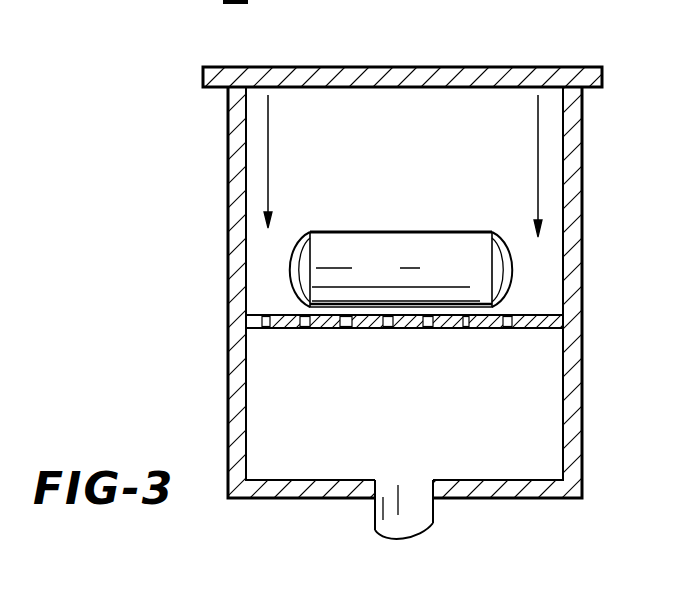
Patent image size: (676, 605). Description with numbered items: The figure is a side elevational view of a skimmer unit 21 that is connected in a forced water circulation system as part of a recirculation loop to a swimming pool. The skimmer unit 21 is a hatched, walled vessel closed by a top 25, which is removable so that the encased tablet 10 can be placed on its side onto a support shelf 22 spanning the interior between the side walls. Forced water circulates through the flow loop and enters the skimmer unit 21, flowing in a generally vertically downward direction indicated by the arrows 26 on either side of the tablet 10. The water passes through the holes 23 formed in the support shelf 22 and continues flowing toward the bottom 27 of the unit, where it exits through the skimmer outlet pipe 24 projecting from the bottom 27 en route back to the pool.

The encased tablet 10 is at (404, 224).
The skimmer unit 21 is at (222, 200).
The support shelf 22 is at (485, 329).
The holes 23 is at (383, 329).
The skimmer outlet pipe 24 is at (433, 523).
The top 25 is at (450, 70).
The generally vertically downward flow direction 26 is at (272, 168).
The bottom 27 is at (285, 487).